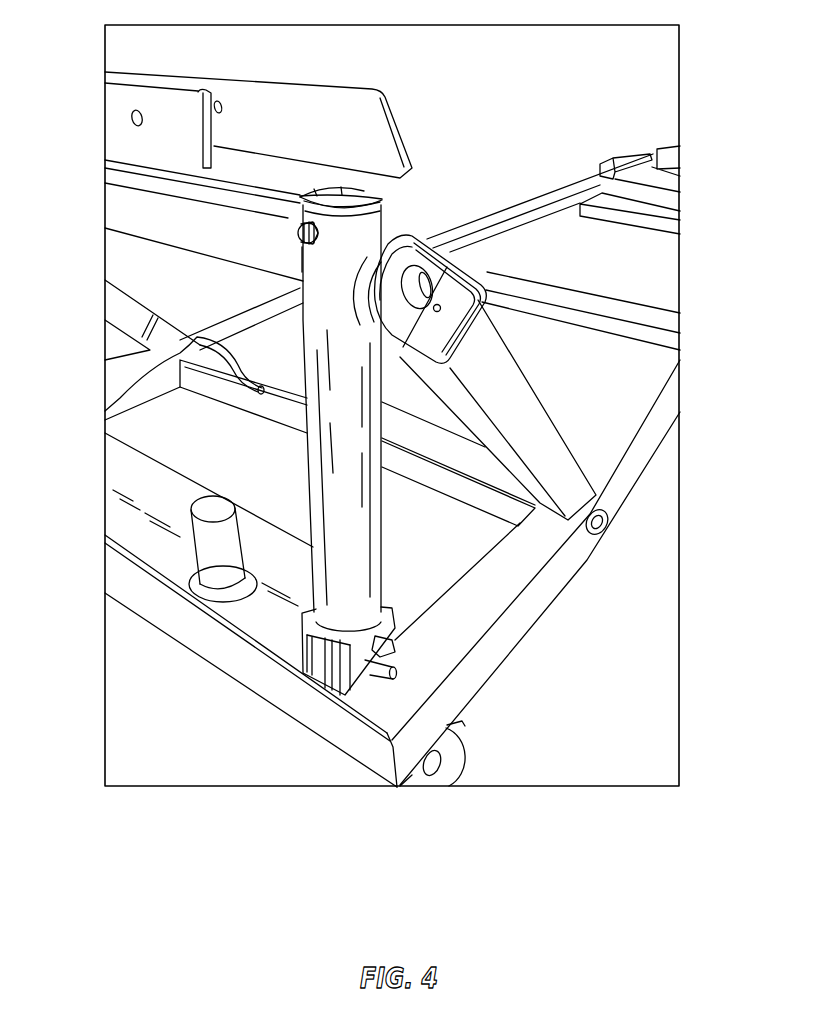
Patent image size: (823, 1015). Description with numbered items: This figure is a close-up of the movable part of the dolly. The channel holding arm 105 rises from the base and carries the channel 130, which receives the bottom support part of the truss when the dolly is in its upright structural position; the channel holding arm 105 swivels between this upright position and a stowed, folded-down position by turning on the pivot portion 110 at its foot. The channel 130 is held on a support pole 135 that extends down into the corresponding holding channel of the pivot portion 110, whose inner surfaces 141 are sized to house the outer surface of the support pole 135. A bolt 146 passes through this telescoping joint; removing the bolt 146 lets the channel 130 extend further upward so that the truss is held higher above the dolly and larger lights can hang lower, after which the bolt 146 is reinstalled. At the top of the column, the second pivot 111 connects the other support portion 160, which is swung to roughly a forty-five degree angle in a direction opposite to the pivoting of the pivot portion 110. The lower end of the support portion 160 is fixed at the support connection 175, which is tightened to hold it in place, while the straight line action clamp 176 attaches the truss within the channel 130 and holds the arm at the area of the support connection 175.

The channel holding arm 105 is at (302, 260).
The pivot portion 110 is at (322, 672).
The second pivot 111 is at (497, 248).
The channel 130 is at (120, 147).
The support pole 135 is at (384, 202).
The inner surfaces 141 is at (352, 178).
The bolt 146 is at (297, 231).
The support portion 160 is at (527, 404).
The support connection 175 is at (587, 490).
The straight line action clamp 176 is at (105, 411).